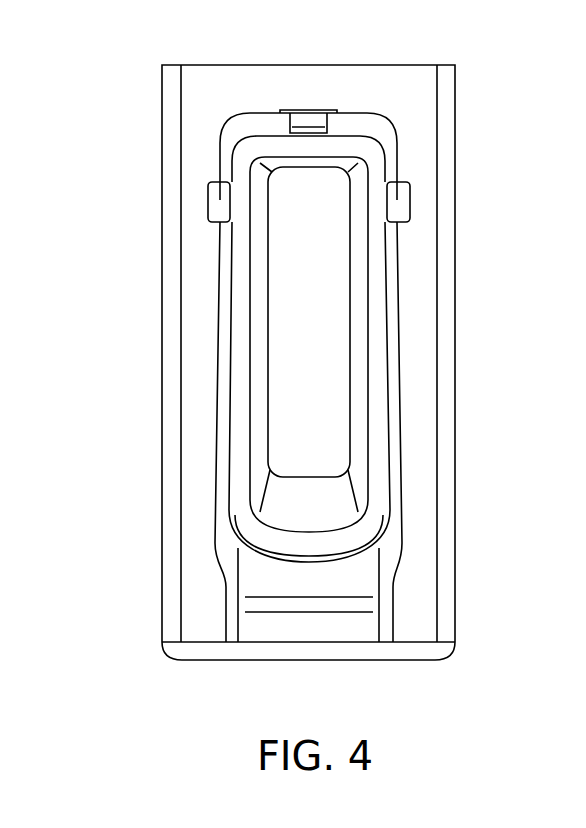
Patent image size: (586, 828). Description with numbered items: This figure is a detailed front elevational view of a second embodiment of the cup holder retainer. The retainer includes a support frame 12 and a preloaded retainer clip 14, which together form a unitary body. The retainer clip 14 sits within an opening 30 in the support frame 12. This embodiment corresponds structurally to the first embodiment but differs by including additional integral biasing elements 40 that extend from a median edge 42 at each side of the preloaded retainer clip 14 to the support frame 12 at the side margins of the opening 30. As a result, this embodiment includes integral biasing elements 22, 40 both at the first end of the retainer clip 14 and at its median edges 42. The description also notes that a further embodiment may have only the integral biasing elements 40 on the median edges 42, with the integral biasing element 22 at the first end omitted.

The support frame 12 is at (200, 543).
The preloaded retainer clip 14 is at (297, 332).
The integral biasing element 22 is at (302, 120).
The opening 30 is at (349, 127).
The integral biasing element 40 is at (220, 203).
The median edge 42 is at (228, 268).